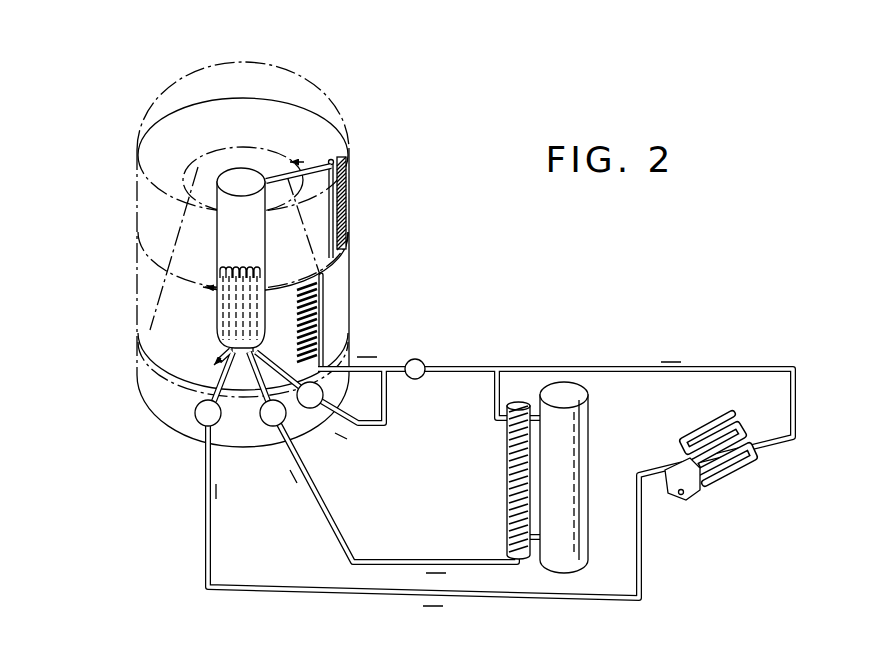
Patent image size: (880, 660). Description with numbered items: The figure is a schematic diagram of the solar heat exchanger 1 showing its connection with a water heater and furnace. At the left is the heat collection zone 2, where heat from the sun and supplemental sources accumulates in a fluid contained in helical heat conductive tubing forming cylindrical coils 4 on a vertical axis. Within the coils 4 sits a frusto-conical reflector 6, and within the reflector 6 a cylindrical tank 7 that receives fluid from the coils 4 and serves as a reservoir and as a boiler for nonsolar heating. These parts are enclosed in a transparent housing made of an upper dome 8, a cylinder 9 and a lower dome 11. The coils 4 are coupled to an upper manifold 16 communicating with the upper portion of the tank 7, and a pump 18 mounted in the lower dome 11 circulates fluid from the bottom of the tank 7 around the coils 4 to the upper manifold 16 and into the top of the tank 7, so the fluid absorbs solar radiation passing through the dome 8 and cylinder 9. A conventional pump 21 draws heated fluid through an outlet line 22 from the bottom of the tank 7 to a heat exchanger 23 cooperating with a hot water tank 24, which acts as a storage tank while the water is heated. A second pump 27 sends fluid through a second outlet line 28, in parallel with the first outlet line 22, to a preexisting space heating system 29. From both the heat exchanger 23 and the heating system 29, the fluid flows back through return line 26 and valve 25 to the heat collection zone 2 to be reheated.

The solar heat exchanger 1 is at (182, 66).
The heat collection zone 2 is at (103, 212).
The cylindrical coils 4 is at (348, 196).
The reflector 6 is at (160, 292).
The cylindrical tank 7 is at (232, 247).
The upper dome 8 is at (337, 141).
The cylinder 9 is at (349, 270).
The lower dome 11 is at (158, 408).
The upper manifold 16 is at (334, 217).
The pump 18 is at (313, 409).
The pump 21 is at (270, 428).
The outlet line 22 is at (333, 532).
The heat exchanger 23 is at (506, 482).
The hot water tank 24 is at (592, 447).
The valve 25 is at (418, 358).
The return line 26 is at (475, 363).
The second pump 27 is at (200, 432).
The second outlet line 28 is at (205, 533).
The space heating system 29 is at (687, 517).